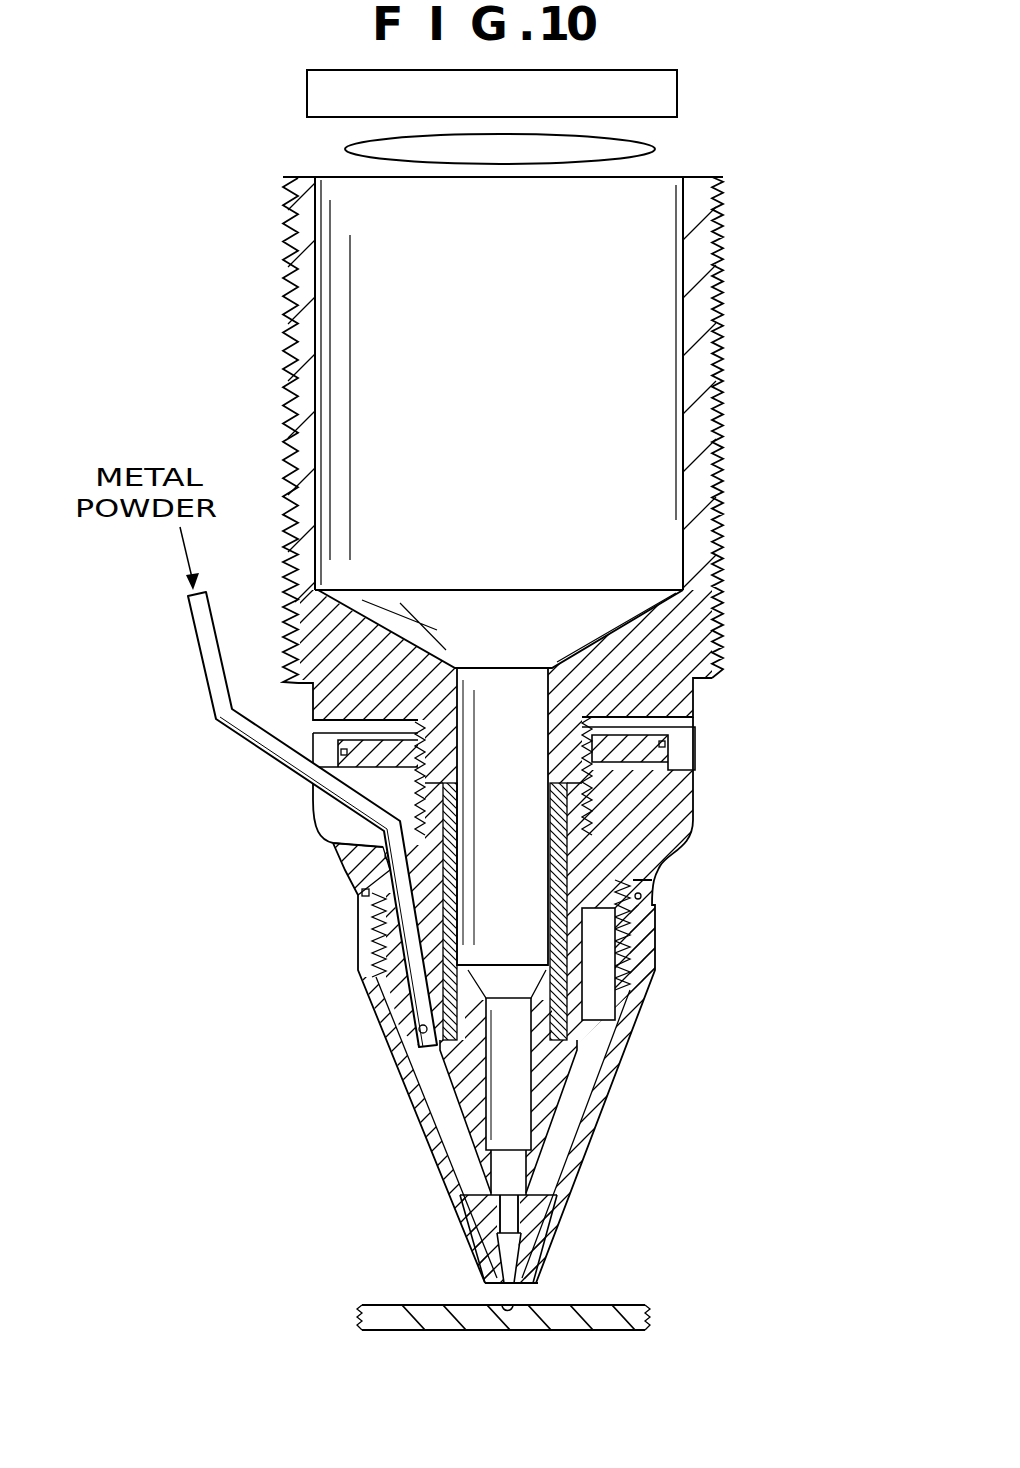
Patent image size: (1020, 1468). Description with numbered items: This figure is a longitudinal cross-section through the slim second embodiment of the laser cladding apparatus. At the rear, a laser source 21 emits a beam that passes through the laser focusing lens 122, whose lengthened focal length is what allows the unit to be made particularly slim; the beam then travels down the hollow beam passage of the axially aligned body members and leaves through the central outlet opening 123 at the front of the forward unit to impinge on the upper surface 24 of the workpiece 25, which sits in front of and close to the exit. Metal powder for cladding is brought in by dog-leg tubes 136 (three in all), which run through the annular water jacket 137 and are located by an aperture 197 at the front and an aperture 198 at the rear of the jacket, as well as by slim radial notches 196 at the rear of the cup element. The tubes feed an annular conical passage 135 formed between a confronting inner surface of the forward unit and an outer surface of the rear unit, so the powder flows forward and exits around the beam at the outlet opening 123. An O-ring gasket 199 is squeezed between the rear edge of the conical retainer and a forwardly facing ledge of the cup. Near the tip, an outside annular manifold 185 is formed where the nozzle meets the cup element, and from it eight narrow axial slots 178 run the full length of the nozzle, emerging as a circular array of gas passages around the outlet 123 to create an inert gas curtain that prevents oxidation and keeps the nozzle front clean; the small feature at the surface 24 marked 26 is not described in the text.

The laser source 21 is at (677, 90).
The laser focusing lens 122 is at (655, 148).
The dog-leg tube 136 is at (209, 700).
The radial notch 196 is at (316, 752).
The aperture 198 is at (378, 860).
The O-ring gasket 199 is at (362, 896).
The annular water jacket 137 is at (600, 957).
The aperture 197 is at (420, 1046).
The annular conical passage 135 is at (446, 1088).
The outside annular manifold 185 is at (577, 1184).
The axial slot 178 is at (553, 1232).
The outlet opening 123 is at (503, 1287).
The upper surface 24 is at (378, 1303).
The melt pool 26 is at (512, 1305).
The workpiece 25 is at (733, 1308).